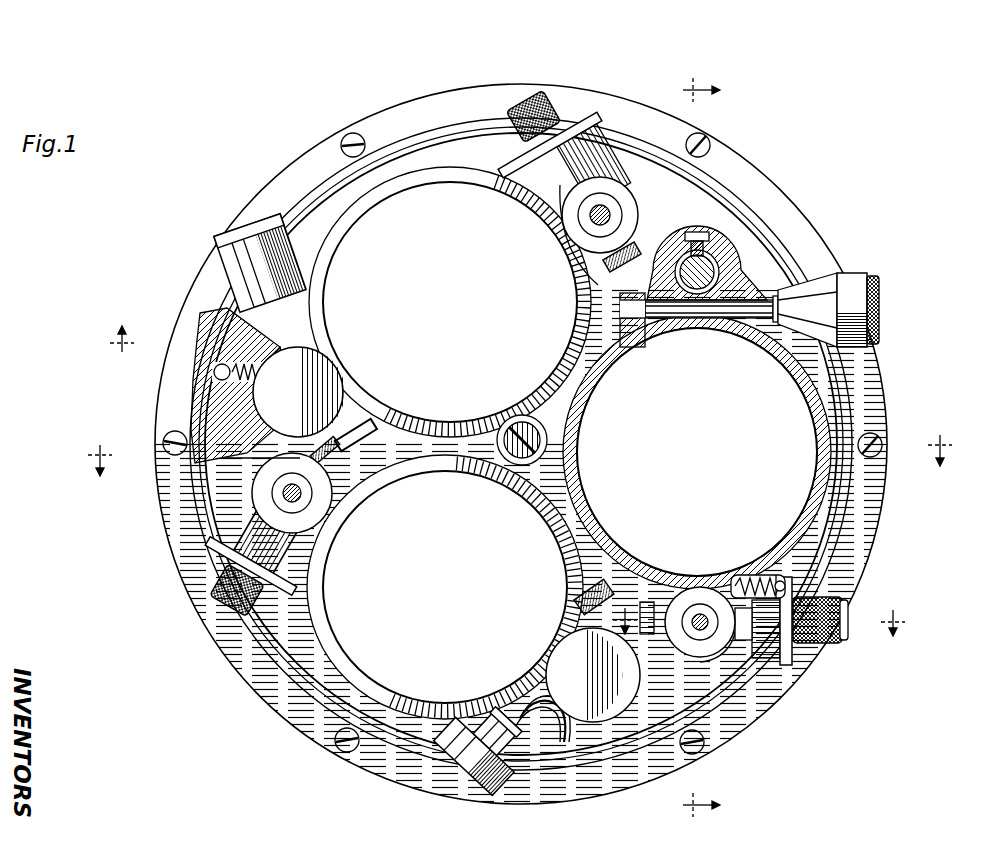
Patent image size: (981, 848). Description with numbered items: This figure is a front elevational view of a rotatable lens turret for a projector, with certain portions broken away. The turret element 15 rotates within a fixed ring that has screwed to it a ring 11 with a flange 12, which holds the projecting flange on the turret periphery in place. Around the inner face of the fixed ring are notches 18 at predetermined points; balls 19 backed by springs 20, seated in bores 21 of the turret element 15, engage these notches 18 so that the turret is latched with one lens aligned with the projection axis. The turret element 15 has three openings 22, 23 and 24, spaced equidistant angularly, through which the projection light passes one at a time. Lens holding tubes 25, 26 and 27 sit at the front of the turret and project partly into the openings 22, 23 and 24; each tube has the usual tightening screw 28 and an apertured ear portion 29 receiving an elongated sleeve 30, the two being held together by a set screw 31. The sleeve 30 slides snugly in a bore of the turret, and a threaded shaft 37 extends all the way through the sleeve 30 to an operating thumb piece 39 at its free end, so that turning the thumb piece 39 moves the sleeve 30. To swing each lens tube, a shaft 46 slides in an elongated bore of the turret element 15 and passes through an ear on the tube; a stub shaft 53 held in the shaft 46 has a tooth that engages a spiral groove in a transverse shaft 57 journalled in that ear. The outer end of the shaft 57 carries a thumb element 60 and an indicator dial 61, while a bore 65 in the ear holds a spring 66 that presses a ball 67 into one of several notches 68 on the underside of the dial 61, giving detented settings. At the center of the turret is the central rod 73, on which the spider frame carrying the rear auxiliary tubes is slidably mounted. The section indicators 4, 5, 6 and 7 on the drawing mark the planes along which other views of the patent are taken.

The ring 11 is at (284, 195).
The flange 12 is at (330, 187).
The turret element 15 is at (460, 150).
The notches or indentations 18 is at (216, 369).
The balls 19 is at (208, 361).
The springs 20 is at (212, 391).
The bores 21 is at (190, 419).
The opening 22 is at (450, 302).
The opening 23 is at (697, 452).
The opening 24 is at (445, 587).
The lens holding tube 25 is at (436, 180).
The lens holding tube 26 is at (579, 424).
The lens holding tube 27 is at (532, 494).
The tightening screw 28 is at (254, 273).
The apertured ear portion 29 is at (735, 288).
The elongated sleeve 30 is at (842, 270).
The set screw 31 is at (703, 233).
The shaft 37 is at (661, 275).
The operating thumb piece 39 is at (321, 380).
The shaft 46 is at (593, 226).
The stub shaft 53 is at (594, 229).
The transverse shaft 57 is at (597, 214).
The thumb element 60 is at (554, 94).
The indicator dial or disk 61 is at (587, 132).
The bore 65 is at (763, 590).
The spring 66 is at (743, 586).
The ball 67 is at (776, 586).
The notches or indentations 68 is at (784, 579).
The central rod 73 is at (511, 426).
The section line 4- 4 is at (713, 449).
The section line 5- 5 is at (125, 329).
The section line 6- 6 is at (520, 468).
The section line 7- 7 is at (759, 623).